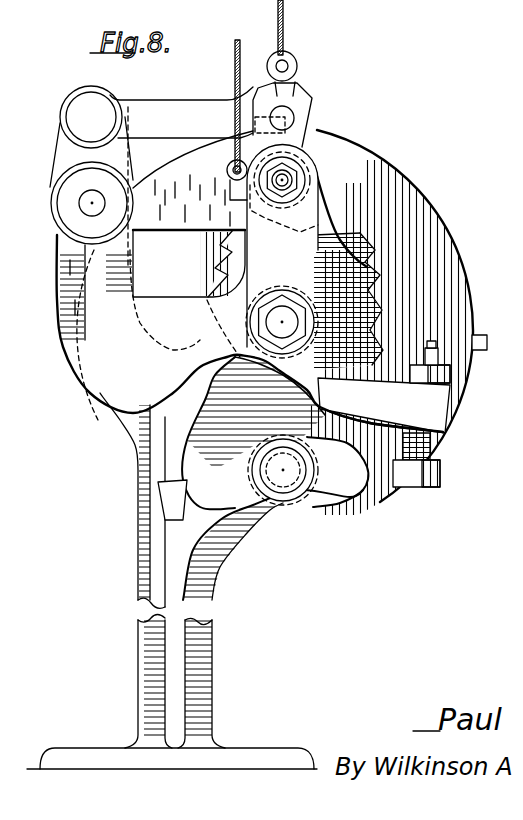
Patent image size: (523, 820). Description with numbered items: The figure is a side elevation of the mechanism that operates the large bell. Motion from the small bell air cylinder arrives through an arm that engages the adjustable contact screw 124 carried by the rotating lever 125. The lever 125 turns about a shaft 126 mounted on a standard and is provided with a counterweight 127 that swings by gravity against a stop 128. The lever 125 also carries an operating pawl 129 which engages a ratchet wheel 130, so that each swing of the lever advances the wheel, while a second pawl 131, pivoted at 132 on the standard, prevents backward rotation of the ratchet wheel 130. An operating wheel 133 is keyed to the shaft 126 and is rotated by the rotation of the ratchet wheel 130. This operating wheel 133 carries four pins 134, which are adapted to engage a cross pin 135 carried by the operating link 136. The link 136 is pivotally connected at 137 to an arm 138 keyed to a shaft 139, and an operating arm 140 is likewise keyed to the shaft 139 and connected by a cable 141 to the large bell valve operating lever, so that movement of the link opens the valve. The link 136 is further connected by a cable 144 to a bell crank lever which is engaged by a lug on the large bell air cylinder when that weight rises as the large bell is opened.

The adjustable contact screw 124 is at (380, 318).
The rotating lever 125 is at (435, 417).
The shaft 126 is at (290, 338).
The counterweight 127 is at (103, 390).
The stop 128 is at (173, 493).
The operating pawl 129 is at (330, 207).
The ratchet wheel 130 is at (360, 263).
The pawl 131 is at (340, 483).
The pivot 132 is at (282, 537).
The operating wheel 133 is at (390, 197).
The pins 134 is at (478, 333).
The cross pin 135 is at (300, 113).
The operating link 136 is at (175, 113).
The pivotal connection 137 is at (103, 108).
The arm 138 is at (72, 150).
The shaft 139 is at (87, 207).
The operating arm 140 is at (167, 240).
The cable 141 is at (235, 47).
The cable 144 is at (284, 22).